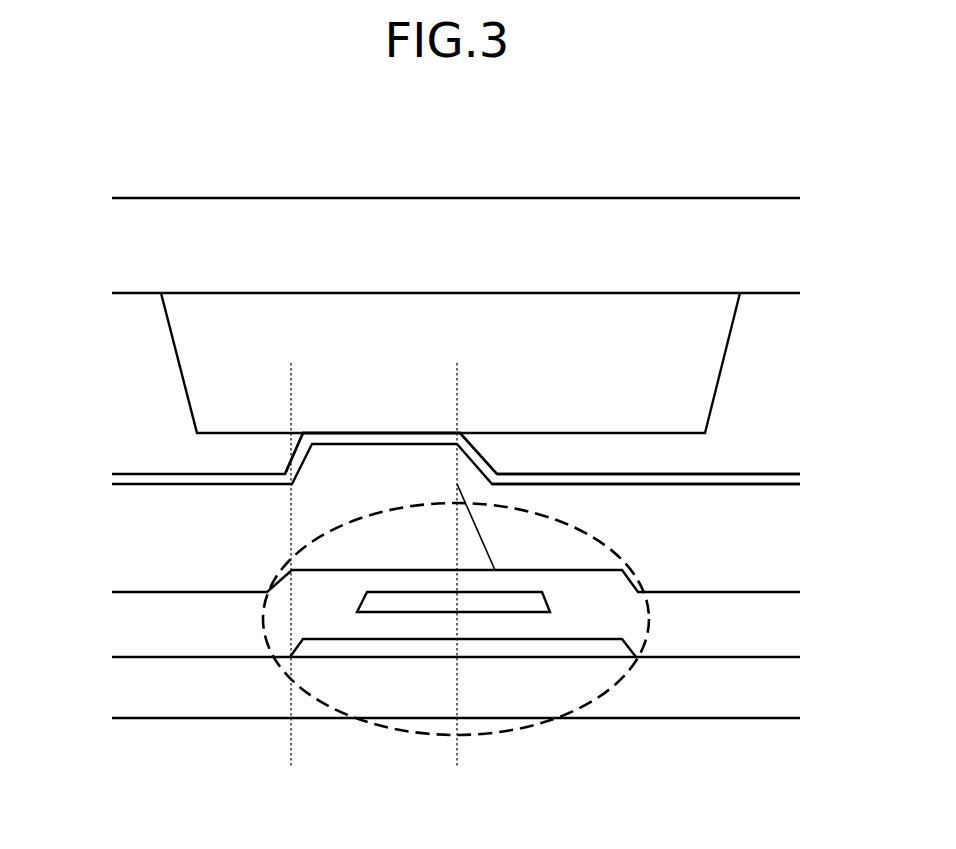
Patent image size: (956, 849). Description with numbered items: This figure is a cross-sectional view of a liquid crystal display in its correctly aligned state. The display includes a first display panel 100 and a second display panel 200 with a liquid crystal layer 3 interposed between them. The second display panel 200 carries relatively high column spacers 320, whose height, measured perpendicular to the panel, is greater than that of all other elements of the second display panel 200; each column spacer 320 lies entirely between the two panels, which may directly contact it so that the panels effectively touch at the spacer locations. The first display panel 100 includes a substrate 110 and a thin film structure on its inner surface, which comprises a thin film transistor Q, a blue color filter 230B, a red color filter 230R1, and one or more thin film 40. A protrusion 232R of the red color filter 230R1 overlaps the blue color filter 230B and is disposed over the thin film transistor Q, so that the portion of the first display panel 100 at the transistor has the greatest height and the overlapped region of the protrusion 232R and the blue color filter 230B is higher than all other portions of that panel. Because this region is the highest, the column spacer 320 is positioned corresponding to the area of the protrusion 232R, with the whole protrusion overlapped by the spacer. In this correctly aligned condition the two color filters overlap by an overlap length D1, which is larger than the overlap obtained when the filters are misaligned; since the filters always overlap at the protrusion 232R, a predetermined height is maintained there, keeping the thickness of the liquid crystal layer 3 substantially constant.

The second display panel 200 is at (805, 198).
The column spacer 320 is at (197, 349).
The liquid crystal layer 3 is at (805, 293).
The thin film 40 is at (157, 480).
The protrusion 232R is at (325, 467).
The red color filter 230R1 is at (735, 500).
The blue color filter 230B is at (145, 532).
The first display panel 100 is at (805, 474).
The substrate 110 is at (683, 697).
The thin film transistor Q is at (254, 625).
The overlap length D1 is at (457, 753).